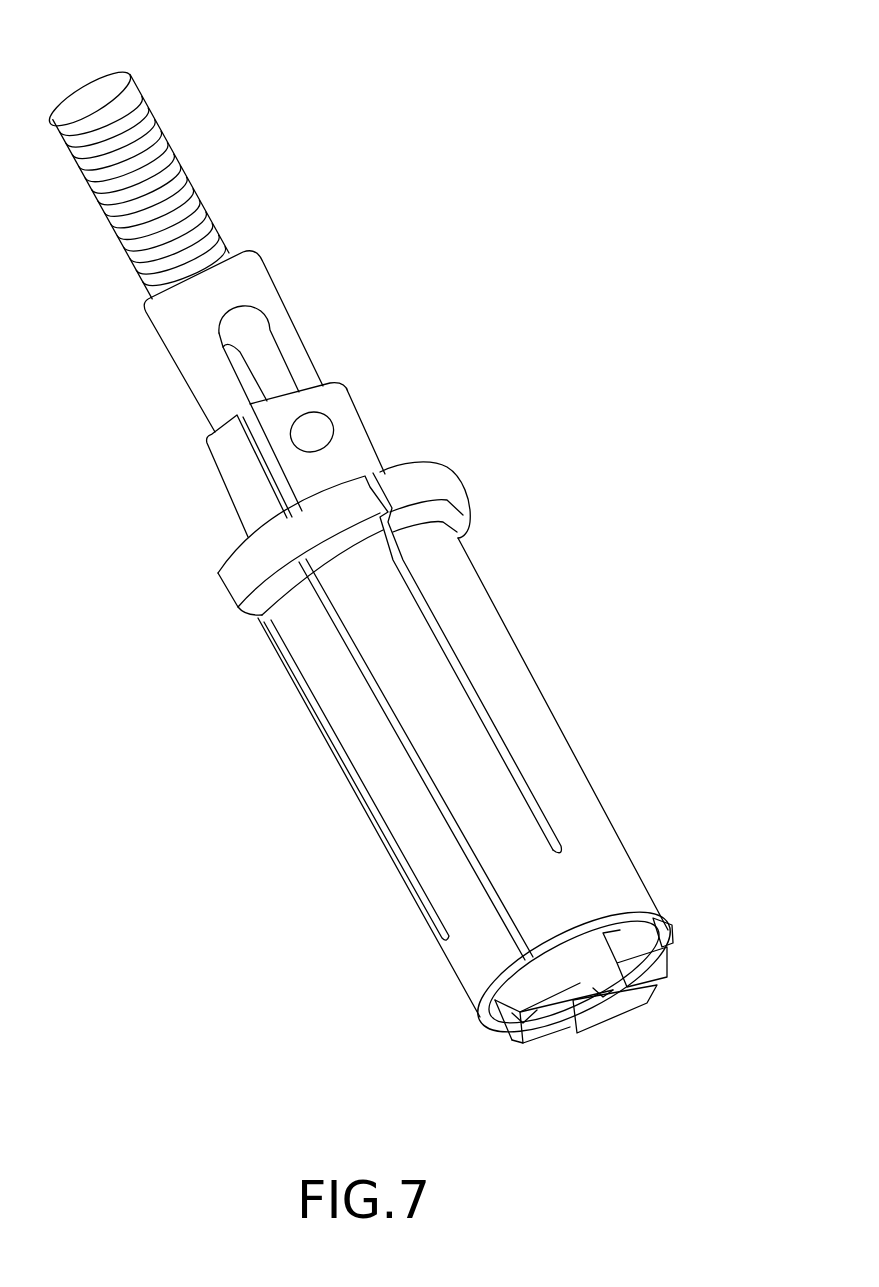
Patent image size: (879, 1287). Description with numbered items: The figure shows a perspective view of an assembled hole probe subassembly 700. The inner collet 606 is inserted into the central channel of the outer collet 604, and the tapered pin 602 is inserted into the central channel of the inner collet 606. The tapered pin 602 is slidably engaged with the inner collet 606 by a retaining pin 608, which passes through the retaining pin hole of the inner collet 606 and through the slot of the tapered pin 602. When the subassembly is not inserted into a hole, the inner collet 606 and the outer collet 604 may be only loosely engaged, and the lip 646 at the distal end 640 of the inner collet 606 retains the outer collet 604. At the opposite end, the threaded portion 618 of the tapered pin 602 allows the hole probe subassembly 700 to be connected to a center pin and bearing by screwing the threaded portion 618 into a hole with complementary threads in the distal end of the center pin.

The hole probe subassembly 700 is at (430, 150).
The threaded portion 618 is at (173, 135).
The tapered pin 602 is at (272, 280).
The inner collet 606 is at (222, 488).
The retaining pin 608 is at (337, 420).
The outer collet 604 is at (532, 672).
The lip 646 is at (672, 942).
The distal end 640 is at (543, 1034).